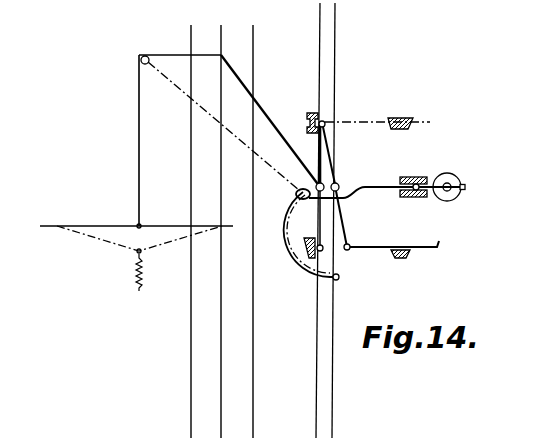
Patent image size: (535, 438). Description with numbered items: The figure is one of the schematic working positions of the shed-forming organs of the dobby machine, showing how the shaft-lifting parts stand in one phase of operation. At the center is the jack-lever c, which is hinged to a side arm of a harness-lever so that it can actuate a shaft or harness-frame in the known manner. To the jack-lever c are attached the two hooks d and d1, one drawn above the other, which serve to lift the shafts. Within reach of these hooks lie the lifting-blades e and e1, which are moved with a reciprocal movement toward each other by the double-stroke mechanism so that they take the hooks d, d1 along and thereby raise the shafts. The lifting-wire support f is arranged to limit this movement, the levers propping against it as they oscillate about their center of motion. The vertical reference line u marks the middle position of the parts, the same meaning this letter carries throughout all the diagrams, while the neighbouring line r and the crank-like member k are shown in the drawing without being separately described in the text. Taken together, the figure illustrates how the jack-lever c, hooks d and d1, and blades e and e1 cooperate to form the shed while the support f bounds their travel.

The vertical rod r is at (318, 20).
The middle position u is at (338, 20).
The jack-lever c is at (333, 166).
The hook d is at (375, 122).
The lifting-blade e is at (400, 133).
The crank k is at (455, 179).
The lifting-wire support f is at (317, 257).
The hook d1 is at (394, 261).
The lifting-blade e1 is at (398, 266).